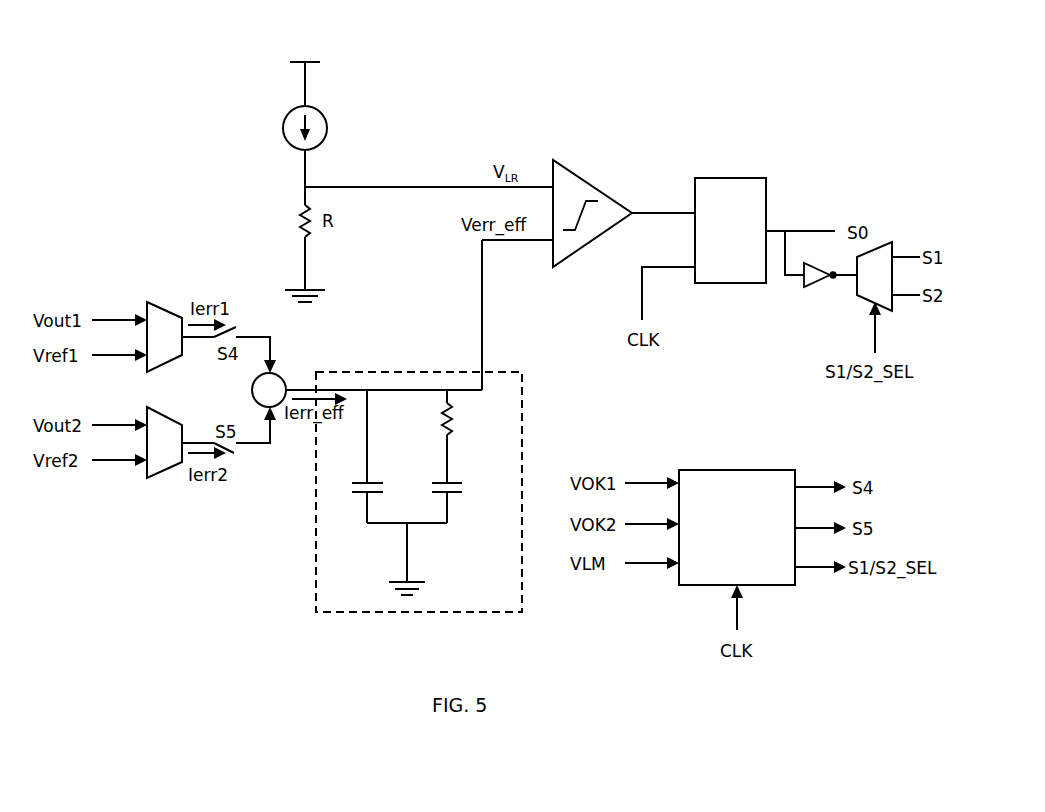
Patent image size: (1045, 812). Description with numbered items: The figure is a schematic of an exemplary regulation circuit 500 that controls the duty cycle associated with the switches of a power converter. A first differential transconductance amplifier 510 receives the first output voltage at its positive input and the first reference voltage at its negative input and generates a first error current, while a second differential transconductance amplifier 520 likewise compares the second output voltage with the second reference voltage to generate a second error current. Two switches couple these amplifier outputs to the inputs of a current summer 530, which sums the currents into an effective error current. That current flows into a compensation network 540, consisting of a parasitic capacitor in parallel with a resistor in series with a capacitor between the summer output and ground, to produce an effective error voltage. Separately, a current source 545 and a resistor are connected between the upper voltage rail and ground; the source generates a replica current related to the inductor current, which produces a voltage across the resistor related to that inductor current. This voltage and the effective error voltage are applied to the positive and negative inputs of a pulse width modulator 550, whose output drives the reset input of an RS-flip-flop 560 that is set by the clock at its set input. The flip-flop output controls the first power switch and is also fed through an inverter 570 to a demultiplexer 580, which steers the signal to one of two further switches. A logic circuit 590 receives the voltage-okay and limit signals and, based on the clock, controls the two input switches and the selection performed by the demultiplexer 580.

The regulation circuit 500 is at (478, 90).
The first differential transconductance amplifier 510 is at (150, 301).
The second differential transconductance amplifier 520 is at (150, 479).
The current summer 530 is at (282, 378).
The compensation network 540 is at (441, 372).
The current source 545 is at (319, 108).
The pulse width modulator 550 is at (592, 182).
The RS-flip-flop 560 is at (732, 178).
The inverter 570 is at (822, 285).
The demultiplexer 580 is at (874, 276).
The logic circuit 590 is at (737, 527).